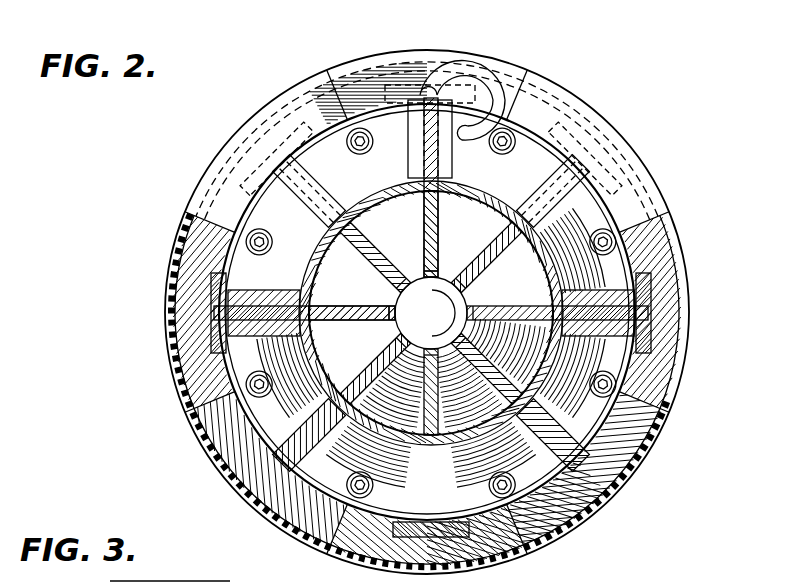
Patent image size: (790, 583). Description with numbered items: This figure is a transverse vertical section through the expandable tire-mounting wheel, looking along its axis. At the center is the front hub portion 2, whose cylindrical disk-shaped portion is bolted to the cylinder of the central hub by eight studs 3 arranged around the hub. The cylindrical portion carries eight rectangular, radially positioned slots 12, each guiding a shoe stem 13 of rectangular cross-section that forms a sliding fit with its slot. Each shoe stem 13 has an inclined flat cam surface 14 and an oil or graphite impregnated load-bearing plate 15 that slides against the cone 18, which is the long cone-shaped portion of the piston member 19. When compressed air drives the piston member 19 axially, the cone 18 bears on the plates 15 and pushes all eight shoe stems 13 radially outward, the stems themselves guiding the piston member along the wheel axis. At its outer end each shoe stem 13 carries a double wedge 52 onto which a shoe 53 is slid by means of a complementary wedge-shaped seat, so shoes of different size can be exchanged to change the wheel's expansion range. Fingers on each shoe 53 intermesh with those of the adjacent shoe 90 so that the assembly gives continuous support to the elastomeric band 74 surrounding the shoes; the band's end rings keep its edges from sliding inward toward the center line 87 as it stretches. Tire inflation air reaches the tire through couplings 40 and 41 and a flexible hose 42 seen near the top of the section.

In FIG. 2, the front hub portion 2 is at (292, 263).
In FIG. 2, the studs 3 is at (506, 152).
In FIG. 2, the slots 12 is at (313, 220).
In FIG. 2, the shoe stems 13 is at (422, 238).
In FIG. 2, the inclined flat cam surfaces 14 is at (429, 352).
In FIG. 2, the load-bearing plates 15 is at (431, 313).
In FIG. 2, the cone 18 is at (472, 210).
In FIG. 2, the piston member 19 is at (523, 262).
In FIG. 2, the coupling 40 is at (462, 150).
In FIG. 2, the coupling 41 is at (408, 80).
In FIG. 2, the flexible hose 42 is at (476, 55).
In FIG. 2, the wedges 52 is at (618, 124).
In FIG. 2, the shoe 53 is at (190, 360).
In FIG. 2, the elastomeric band 74 is at (568, 520).
In FIG. 2, the center line 87 is at (437, 251).
In FIG. 3, the adjacent shoe 90 is at (232, 582).